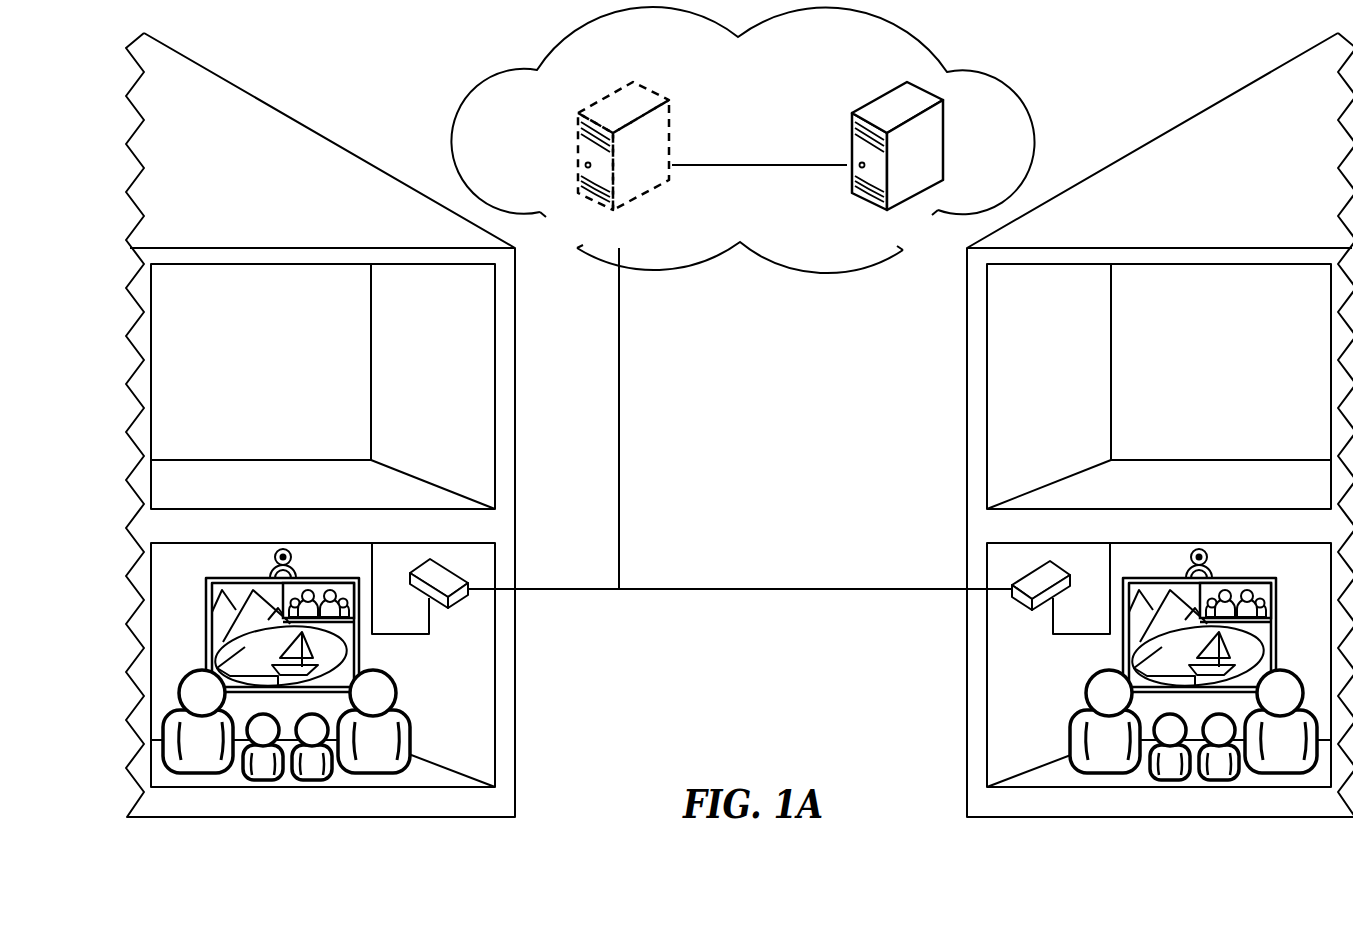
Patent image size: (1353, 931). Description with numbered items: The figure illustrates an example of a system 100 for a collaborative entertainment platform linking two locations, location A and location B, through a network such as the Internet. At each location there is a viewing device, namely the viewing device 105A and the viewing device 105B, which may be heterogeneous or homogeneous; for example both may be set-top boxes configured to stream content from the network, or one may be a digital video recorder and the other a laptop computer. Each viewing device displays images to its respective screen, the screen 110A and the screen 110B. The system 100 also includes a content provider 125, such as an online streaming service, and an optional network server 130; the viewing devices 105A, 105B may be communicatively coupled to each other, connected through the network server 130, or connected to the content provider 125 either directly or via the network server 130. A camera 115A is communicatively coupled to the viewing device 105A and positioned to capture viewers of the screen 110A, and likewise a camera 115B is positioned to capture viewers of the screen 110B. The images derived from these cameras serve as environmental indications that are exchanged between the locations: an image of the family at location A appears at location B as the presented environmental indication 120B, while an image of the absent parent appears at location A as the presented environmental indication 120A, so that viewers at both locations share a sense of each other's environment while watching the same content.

The system 100 is at (1197, 29).
The viewing device 105A is at (526, 620).
The viewing device 105B is at (956, 621).
The screen 110A is at (417, 654).
The screen 110B is at (1067, 654).
The camera 115A is at (220, 547).
The camera 115B is at (1137, 547).
The presented environmental indication 120A is at (355, 569).
The presented environmental indication 120B is at (1268, 569).
The content provider 125 is at (971, 122).
The network server 130 is at (557, 122).